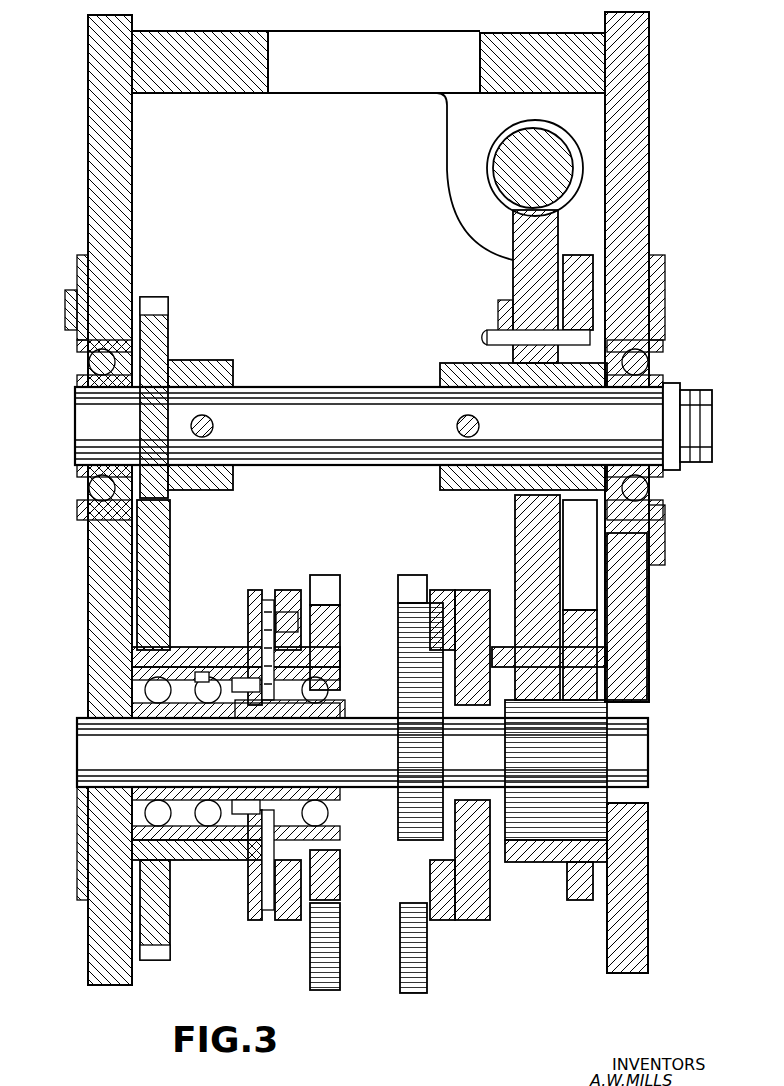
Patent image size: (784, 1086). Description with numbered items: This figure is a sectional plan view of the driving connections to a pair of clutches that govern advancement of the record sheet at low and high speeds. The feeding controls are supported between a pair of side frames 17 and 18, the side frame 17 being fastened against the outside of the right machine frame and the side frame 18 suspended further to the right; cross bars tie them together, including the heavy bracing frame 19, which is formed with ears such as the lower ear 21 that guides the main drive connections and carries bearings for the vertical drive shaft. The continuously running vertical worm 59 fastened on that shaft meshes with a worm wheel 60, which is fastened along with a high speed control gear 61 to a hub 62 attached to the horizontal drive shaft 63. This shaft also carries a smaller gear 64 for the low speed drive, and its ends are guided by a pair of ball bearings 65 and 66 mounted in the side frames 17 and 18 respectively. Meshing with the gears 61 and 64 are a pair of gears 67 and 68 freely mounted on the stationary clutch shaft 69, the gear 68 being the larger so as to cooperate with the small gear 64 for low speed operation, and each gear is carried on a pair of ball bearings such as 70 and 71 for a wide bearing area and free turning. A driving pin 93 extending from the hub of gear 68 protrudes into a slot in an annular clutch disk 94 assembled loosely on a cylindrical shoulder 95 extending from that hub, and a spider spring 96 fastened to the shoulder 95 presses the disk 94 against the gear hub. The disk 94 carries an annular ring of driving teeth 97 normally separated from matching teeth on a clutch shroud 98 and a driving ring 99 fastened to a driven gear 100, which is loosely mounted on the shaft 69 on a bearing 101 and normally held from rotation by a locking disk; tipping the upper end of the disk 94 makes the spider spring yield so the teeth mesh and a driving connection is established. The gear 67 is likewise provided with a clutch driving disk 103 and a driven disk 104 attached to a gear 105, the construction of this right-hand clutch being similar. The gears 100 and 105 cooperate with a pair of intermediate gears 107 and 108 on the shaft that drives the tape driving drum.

The side frame 17 is at (96, 156).
The side frame 18 is at (634, 110).
The bracing frame 19 is at (548, 46).
The lower ear 21 is at (456, 118).
The driving worm 59 is at (492, 182).
The worm wheel 60 is at (522, 268).
The gear 61 is at (575, 283).
The hub 62 is at (455, 368).
The horizontal drive shaft 63 is at (345, 396).
The smaller gear 64 is at (175, 360).
The ball bearing 65 is at (96, 358).
The ball bearing 66 is at (660, 360).
The gear 67 is at (583, 898).
The gear 68 is at (158, 962).
The clutch shaft 69 is at (362, 752).
The ball bearing 70 is at (150, 690).
The ball bearing 71 is at (205, 684).
The driving pin 93 is at (245, 672).
The clutch disk 94 is at (256, 594).
The cylindrical shoulder 95 is at (262, 712).
The spider spring 96 is at (256, 842).
The driving teeth 97 is at (270, 600).
The clutch shroud 98 is at (296, 592).
The driving ring 99 is at (284, 610).
The driven gear 100 is at (332, 586).
The bearing 101 is at (336, 694).
The clutch driving disk 103 is at (478, 600).
The driven disk 104 is at (450, 600).
The gear 105 is at (413, 590).
The intermediate gear 107 is at (313, 990).
The intermediate gear 108 is at (407, 990).